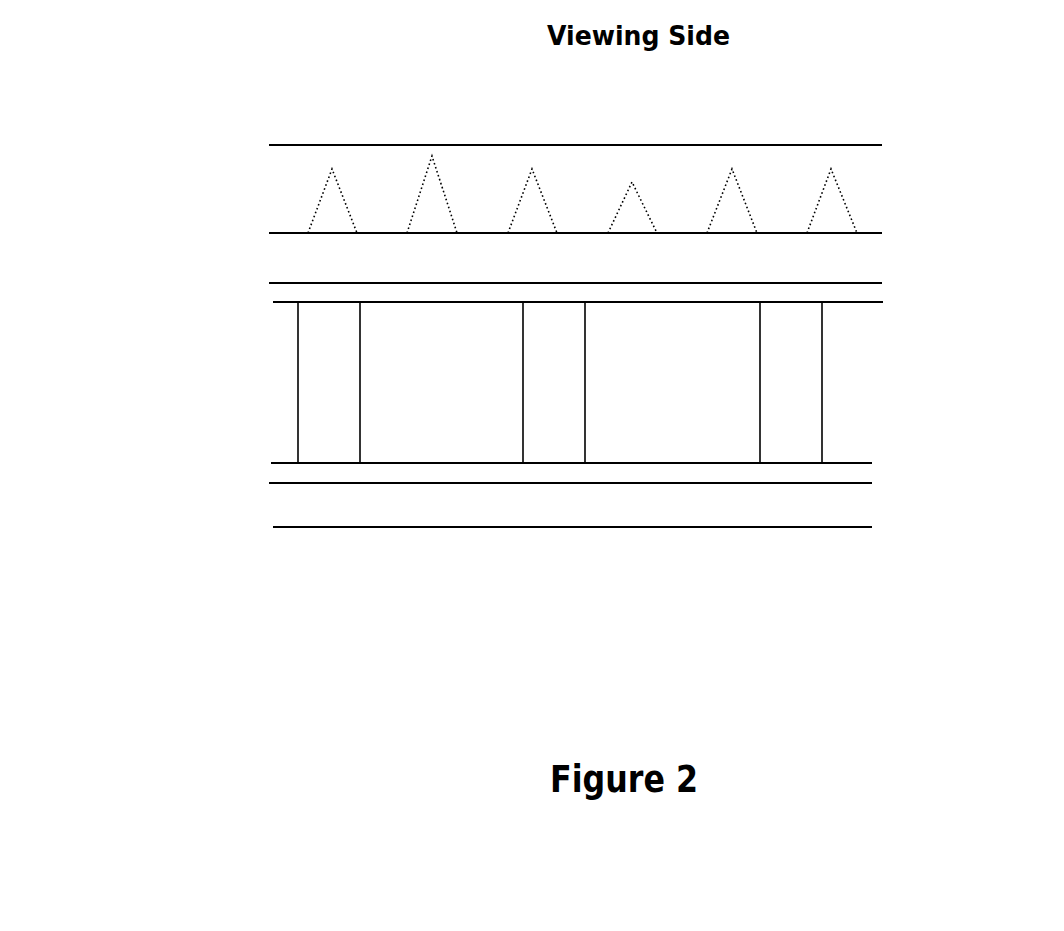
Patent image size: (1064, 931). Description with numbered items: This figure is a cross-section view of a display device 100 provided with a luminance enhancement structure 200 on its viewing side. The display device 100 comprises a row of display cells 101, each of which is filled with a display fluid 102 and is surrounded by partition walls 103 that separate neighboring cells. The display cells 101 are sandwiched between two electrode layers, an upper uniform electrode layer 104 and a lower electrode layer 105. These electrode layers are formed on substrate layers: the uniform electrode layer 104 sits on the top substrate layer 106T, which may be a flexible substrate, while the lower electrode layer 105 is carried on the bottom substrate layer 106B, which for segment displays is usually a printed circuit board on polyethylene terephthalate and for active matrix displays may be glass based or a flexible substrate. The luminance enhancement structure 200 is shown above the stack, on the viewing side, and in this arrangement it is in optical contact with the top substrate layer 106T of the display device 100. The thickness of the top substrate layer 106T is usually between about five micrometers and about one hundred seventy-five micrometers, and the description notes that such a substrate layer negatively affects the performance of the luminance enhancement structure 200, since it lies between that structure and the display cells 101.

The display device 100 is at (596, 367).
The display cells 101 is at (397, 377).
The display fluid 102 is at (410, 416).
The partition walls 103 is at (561, 416).
The uniform electrode layer 104 is at (870, 295).
The electrode layer 105 is at (686, 478).
The top substrate layer 106T is at (283, 258).
The bottom substrate layer 106B is at (787, 516).
The luminance enhancement structure 200 is at (782, 195).